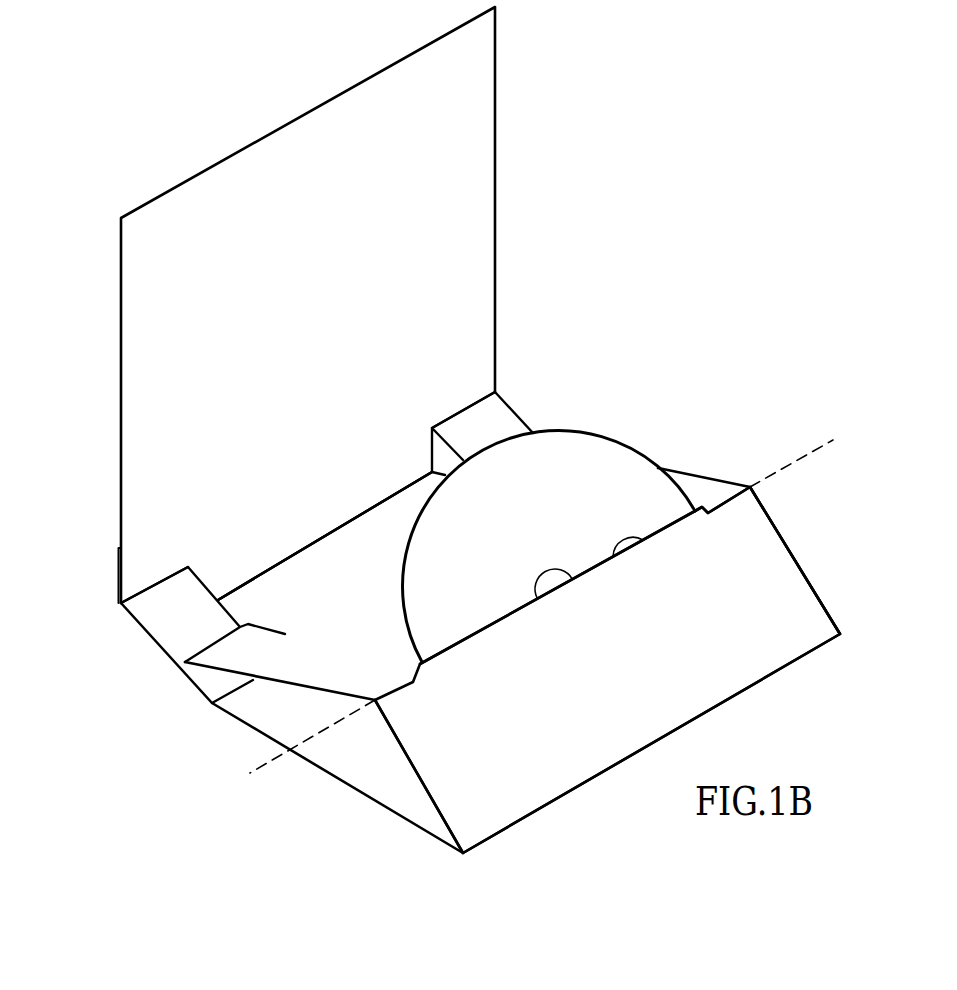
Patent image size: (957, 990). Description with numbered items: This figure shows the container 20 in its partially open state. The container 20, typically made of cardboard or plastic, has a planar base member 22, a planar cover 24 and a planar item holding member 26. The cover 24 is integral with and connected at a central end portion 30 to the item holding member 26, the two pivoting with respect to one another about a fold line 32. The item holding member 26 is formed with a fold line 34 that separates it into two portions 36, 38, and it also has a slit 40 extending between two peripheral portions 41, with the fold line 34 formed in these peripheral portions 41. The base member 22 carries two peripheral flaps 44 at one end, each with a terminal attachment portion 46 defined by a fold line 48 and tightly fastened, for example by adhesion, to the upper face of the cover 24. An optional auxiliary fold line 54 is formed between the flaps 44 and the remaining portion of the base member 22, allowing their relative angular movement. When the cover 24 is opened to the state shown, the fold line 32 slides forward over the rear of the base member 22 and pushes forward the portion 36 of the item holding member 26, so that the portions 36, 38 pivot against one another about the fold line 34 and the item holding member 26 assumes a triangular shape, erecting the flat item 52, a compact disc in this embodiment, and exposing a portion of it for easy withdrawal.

The container 20 is at (686, 283).
The base member 22 is at (303, 726).
The cover 24 is at (303, 316).
The item holding member 26 is at (712, 454).
The central end portion 30 is at (282, 545).
The fold line 32 is at (343, 517).
The fold line 34 is at (725, 498).
The portion of item holding member 36 is at (345, 612).
The portion of item holding member 38 is at (608, 664).
The slit 40 is at (633, 543).
The peripheral portions 41 is at (715, 492).
The peripheral flaps 44 is at (195, 627).
The terminal attachment portion 46 is at (119, 588).
The fold line 48 is at (150, 590).
The flat item 52 is at (560, 460).
The auxiliary fold line 54 is at (237, 692).